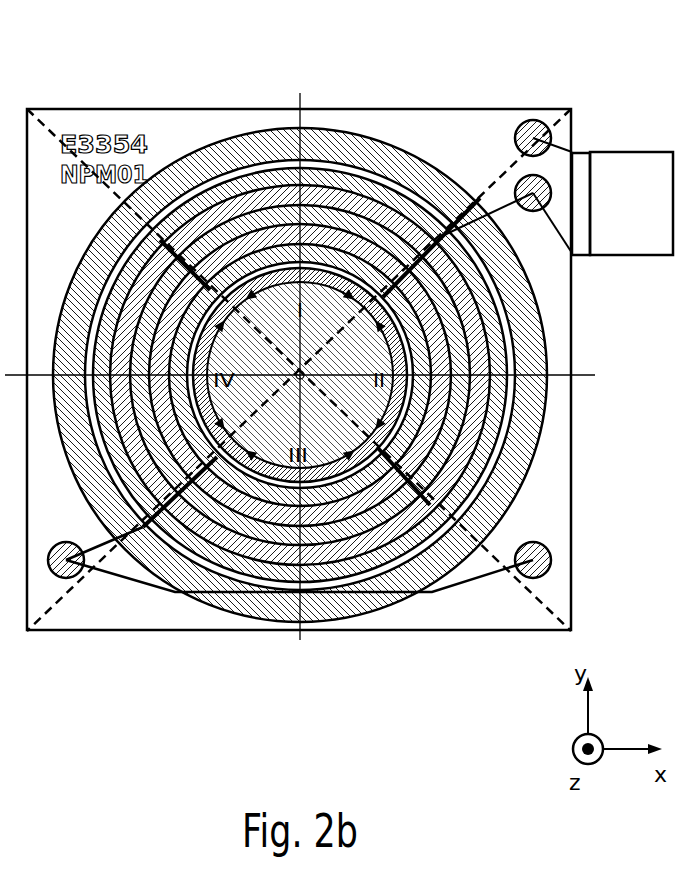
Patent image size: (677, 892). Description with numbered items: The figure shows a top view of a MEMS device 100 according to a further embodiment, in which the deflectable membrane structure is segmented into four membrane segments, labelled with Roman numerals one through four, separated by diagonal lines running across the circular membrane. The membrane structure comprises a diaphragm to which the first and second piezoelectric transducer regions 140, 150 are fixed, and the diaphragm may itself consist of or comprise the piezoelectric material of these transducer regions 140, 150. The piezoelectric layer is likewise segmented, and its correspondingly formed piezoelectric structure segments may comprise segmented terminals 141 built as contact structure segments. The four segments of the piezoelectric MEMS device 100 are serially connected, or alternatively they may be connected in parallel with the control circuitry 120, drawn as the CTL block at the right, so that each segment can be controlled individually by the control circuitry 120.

The MEMS device 100 is at (76, 44).
The control circuitry 120 is at (636, 152).
The first piezoelectric transducer region 140 is at (217, 497).
The segmented terminal 141 is at (372, 247).
The second piezoelectric transducer region 150 is at (317, 557).